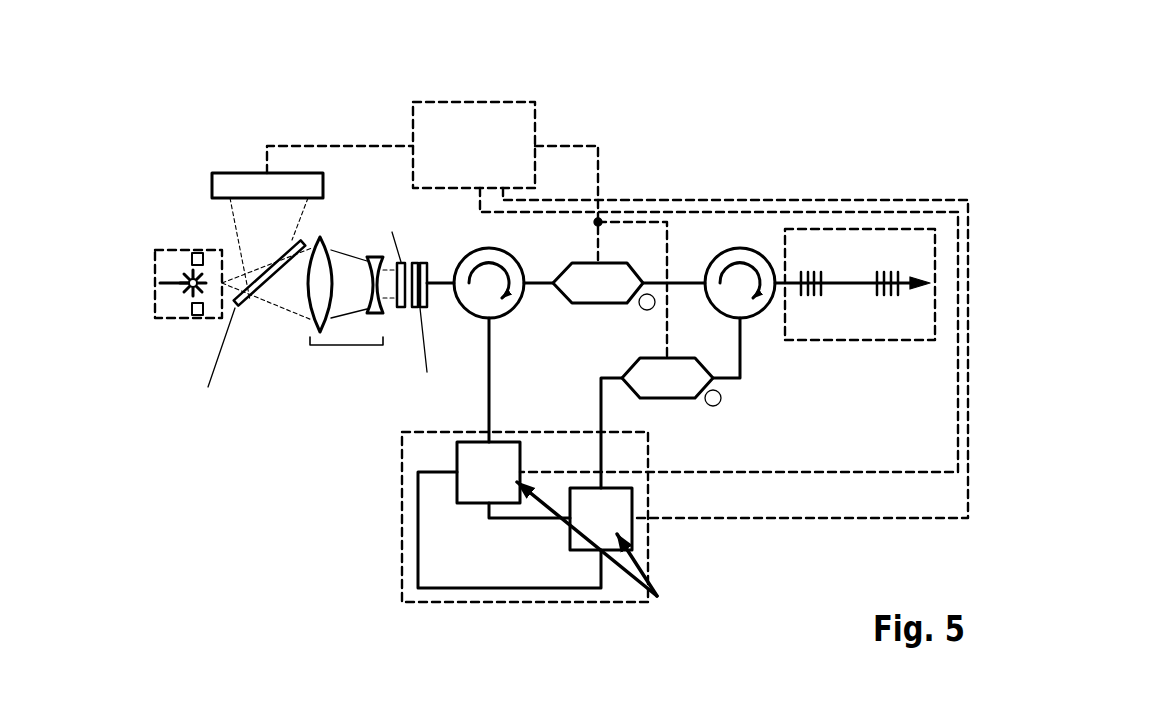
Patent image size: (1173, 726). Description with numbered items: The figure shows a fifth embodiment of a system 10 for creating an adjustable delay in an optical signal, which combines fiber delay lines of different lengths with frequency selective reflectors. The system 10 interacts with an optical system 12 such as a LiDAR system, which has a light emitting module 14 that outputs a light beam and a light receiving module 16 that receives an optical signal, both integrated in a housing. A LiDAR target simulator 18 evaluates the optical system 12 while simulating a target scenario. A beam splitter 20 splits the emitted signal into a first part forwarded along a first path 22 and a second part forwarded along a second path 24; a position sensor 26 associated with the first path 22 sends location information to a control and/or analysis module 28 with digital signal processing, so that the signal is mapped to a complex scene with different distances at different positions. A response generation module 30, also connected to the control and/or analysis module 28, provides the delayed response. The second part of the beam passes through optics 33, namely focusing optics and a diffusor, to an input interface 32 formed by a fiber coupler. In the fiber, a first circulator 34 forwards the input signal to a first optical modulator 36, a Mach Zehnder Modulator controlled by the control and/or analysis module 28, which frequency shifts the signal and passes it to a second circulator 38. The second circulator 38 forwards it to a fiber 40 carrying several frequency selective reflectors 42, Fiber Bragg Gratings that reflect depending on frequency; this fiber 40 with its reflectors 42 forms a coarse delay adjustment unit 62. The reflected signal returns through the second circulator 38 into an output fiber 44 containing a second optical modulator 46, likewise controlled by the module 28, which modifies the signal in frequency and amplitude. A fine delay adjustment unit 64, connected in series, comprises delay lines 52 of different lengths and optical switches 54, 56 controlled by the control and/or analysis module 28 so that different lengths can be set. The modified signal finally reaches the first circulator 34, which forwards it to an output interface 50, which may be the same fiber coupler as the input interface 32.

The system 10 is at (806, 96).
The optical system 12 is at (155, 283).
The light emitting module 14 is at (191, 259).
The light receiving module 16 is at (191, 311).
The LiDAR target simulator 18 is at (650, 129).
The beam splitter 20 is at (252, 311).
The first path 22 is at (316, 222).
The second path 24 is at (287, 337).
The position sensor 26 is at (243, 173).
The control and/or analysis module 28 is at (440, 102).
The response generation module 30 is at (882, 126).
The input interface 32 is at (426, 256).
The optics 33 is at (321, 324).
The first circulator 34 is at (500, 318).
The first optical modulator 36 is at (587, 262).
The second circulator 38 is at (742, 248).
The fiber 40 is at (855, 255).
The frequency selective reflectors 42 is at (823, 256).
The output fiber 44 is at (743, 365).
The second optical modulator 46 is at (637, 358).
The output interface 50 is at (409, 316).
The fiber delay lines 52 is at (503, 520).
The optical switch 54 is at (522, 447).
The optical switch 56 is at (640, 527).
The coarse delay adjustment unit 62 is at (869, 289).
The fine delay adjustment unit 64 is at (520, 514).